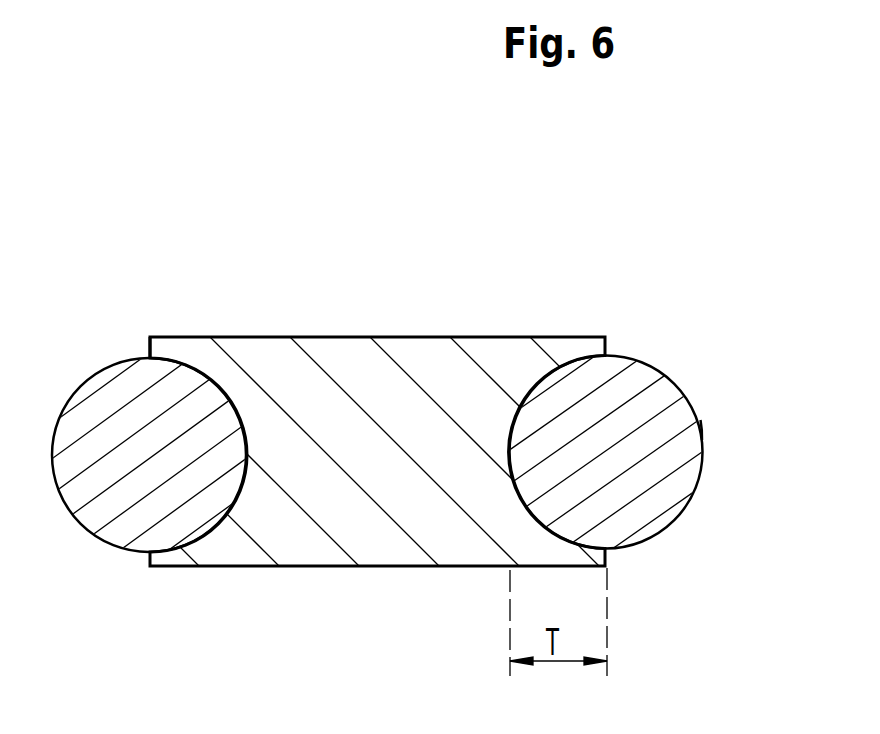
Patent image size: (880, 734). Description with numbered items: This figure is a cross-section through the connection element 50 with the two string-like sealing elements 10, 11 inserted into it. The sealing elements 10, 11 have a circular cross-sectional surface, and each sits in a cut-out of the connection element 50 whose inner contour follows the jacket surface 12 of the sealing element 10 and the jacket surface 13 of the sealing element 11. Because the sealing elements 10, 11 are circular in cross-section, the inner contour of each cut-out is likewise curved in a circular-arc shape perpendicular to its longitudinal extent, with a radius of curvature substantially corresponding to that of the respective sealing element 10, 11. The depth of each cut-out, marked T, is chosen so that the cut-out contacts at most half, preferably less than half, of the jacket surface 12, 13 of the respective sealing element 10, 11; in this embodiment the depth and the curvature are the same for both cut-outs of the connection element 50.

The string-like sealing element 10 is at (97, 443).
The string-like sealing element 11 is at (630, 378).
The jacket surface 12 is at (117, 367).
The jacket surface 13 is at (700, 427).
The connection element 50 is at (426, 276).